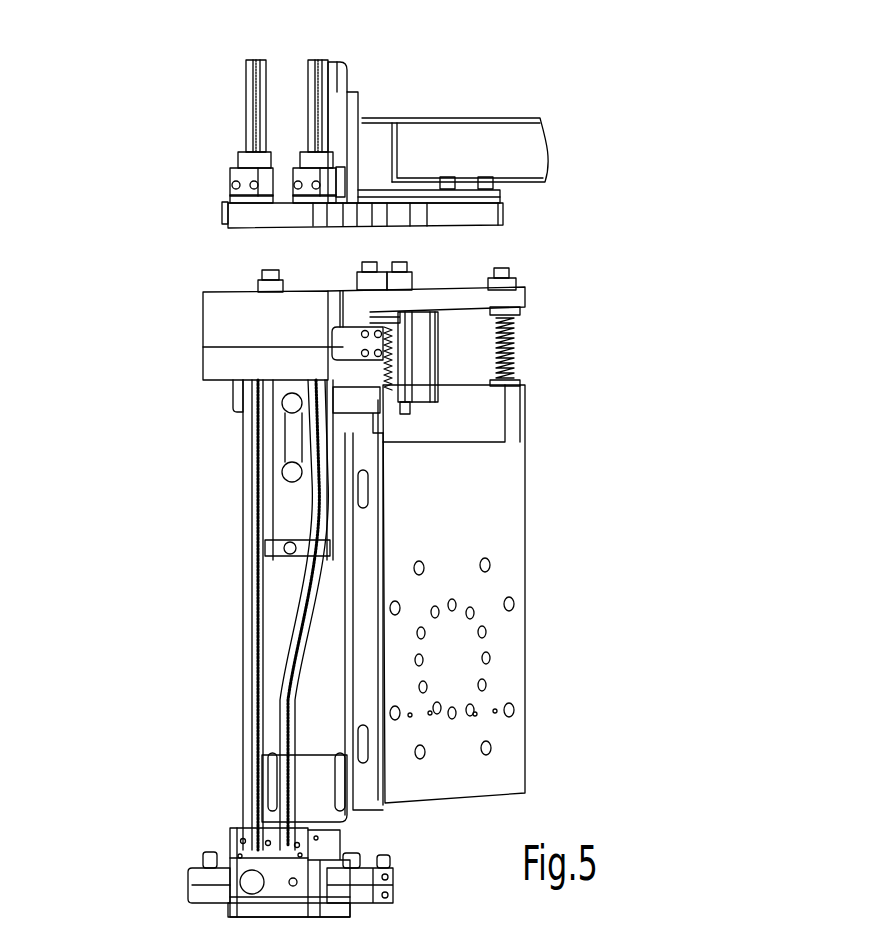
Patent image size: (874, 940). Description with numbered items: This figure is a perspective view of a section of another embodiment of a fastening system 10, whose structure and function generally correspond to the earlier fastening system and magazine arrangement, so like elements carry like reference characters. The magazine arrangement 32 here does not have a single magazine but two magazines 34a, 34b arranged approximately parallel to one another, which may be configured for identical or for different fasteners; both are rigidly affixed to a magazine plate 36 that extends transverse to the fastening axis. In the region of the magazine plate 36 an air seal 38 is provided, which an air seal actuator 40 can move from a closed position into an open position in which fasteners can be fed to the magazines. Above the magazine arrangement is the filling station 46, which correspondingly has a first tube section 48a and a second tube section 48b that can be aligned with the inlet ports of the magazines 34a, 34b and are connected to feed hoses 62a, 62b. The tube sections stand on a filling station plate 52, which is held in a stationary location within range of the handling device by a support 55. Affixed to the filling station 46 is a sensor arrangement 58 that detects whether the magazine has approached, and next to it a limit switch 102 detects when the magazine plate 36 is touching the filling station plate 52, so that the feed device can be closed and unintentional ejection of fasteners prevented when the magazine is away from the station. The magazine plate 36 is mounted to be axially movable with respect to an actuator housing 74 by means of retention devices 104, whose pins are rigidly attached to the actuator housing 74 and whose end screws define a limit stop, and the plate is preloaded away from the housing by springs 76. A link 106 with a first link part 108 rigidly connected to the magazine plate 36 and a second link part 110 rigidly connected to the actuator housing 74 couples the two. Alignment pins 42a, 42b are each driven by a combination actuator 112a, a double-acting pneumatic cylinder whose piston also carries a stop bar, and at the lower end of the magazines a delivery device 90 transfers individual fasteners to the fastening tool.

The fastening system 10 is at (640, 130).
The magazine arrangement 32 is at (597, 330).
The first magazine 34a is at (252, 612).
The second magazine 34b is at (297, 662).
The magazine plate 36 is at (512, 300).
The air seal 38 is at (203, 346).
The air seal actuator 40 is at (345, 355).
The first alignment pin 42a is at (408, 282).
The second alignment pin 42b is at (368, 270).
The filling station 46 is at (568, 142).
The first tube section 48a is at (252, 158).
The second tube section 48b is at (312, 160).
The filling station plate 52 is at (230, 215).
The support 55 is at (537, 150).
The sensor arrangement 58 is at (352, 192).
The first feed hose 62a is at (252, 105).
The second feed hose 62b is at (315, 78).
The actuator housing 74 is at (527, 488).
The springs 76 is at (510, 355).
The delivery device 90 is at (185, 873).
The limit switch 102 is at (350, 122).
The retention device 104 is at (522, 278).
The link 106 is at (278, 453).
The first link part 108 is at (300, 424).
The second link part 110 is at (300, 468).
The combination actuator 112a is at (425, 390).